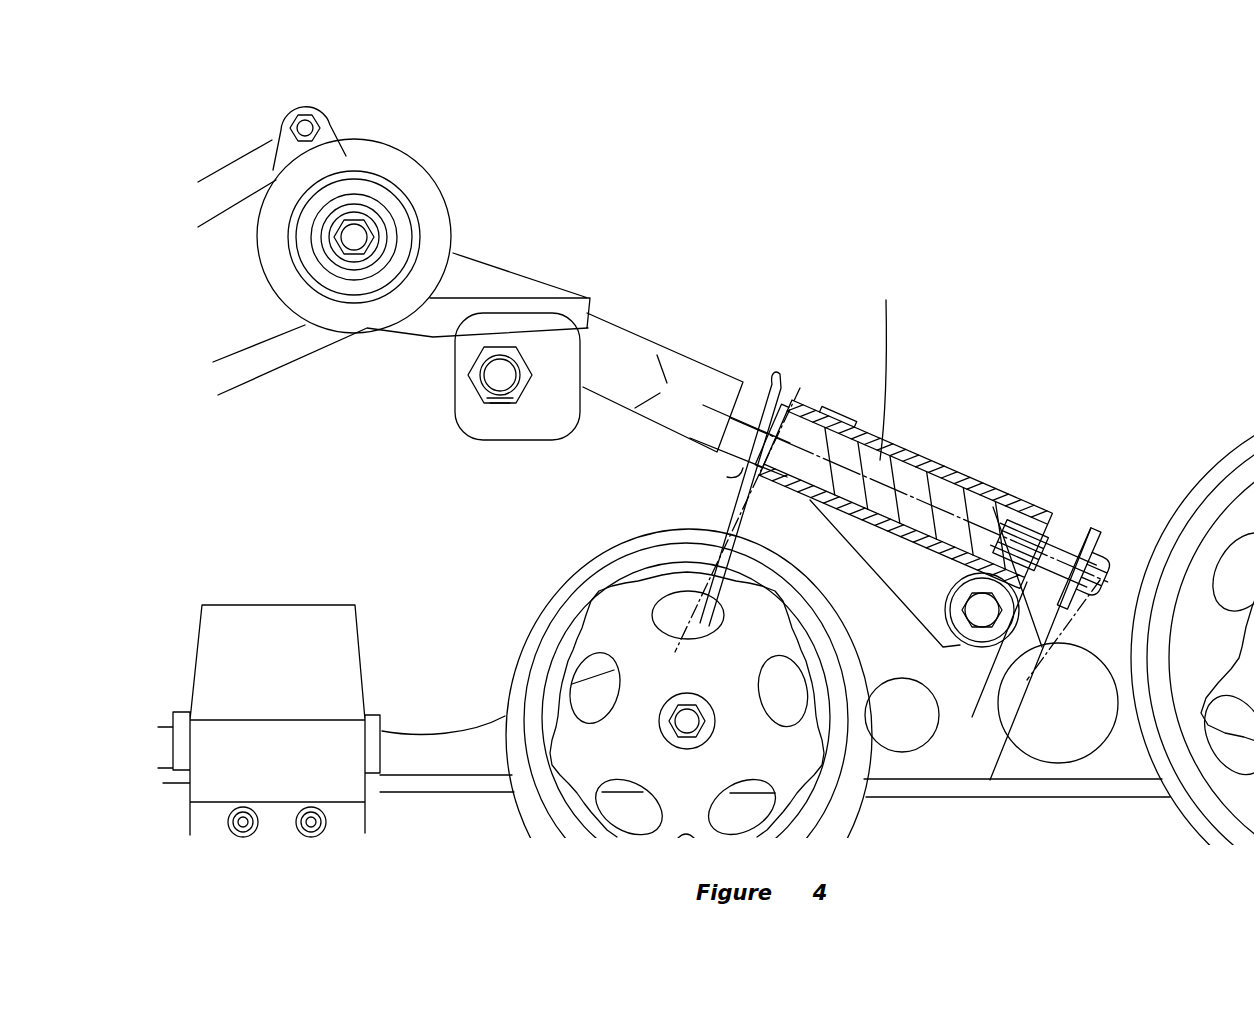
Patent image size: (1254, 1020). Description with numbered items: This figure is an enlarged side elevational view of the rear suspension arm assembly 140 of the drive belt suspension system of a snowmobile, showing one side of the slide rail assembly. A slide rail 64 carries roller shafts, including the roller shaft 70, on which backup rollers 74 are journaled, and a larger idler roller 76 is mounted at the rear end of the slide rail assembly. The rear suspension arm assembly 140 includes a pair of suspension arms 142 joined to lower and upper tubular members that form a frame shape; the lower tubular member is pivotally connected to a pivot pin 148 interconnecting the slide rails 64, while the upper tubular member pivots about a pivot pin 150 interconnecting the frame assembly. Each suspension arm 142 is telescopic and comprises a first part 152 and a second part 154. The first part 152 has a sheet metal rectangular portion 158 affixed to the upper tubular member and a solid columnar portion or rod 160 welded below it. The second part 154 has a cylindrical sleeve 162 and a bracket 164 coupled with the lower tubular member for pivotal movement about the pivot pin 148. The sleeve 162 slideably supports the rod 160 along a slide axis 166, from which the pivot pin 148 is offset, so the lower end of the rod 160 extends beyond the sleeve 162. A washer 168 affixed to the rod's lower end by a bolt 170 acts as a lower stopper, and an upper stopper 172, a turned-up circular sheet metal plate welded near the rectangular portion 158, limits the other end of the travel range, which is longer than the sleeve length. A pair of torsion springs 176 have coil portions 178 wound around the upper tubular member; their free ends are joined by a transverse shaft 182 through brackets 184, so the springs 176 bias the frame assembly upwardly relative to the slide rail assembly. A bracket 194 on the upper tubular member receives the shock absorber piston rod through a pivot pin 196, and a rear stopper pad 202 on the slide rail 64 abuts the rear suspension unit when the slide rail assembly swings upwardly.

The slide rail 64 is at (477, 738).
The roller shaft 70 is at (683, 722).
The backup roller 74 is at (592, 562).
The idler roller 76 is at (1210, 471).
The rear suspension arm assembly 140 is at (720, 346).
The suspension arm 142 is at (684, 446).
The pivot pin 148 is at (1007, 656).
The pivot pin 150 is at (352, 252).
The first part 152 is at (933, 432).
The second part 154 is at (1038, 467).
The rectangular portion 158 is at (717, 385).
The columnar portion or rod 160 is at (890, 369).
The sleeve 162 is at (927, 570).
The bracket 164 is at (1037, 577).
The slide axis 166 is at (1097, 615).
The washer 168 is at (1097, 527).
The bolt 170 is at (1103, 545).
The stopper 172 is at (782, 383).
The torsion spring 176 is at (438, 220).
The coil portion 178 is at (267, 238).
The transverse shaft 182 is at (513, 378).
The bracket 184 is at (462, 397).
The bracket 194 is at (318, 102).
The pivot pin 196 is at (290, 127).
The rear stopper pad 202 is at (280, 620).